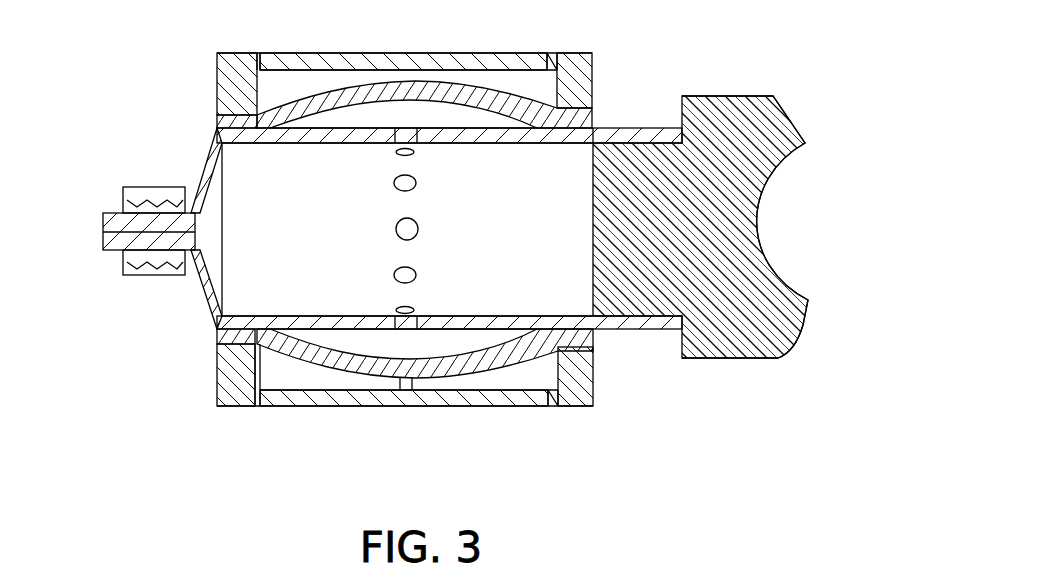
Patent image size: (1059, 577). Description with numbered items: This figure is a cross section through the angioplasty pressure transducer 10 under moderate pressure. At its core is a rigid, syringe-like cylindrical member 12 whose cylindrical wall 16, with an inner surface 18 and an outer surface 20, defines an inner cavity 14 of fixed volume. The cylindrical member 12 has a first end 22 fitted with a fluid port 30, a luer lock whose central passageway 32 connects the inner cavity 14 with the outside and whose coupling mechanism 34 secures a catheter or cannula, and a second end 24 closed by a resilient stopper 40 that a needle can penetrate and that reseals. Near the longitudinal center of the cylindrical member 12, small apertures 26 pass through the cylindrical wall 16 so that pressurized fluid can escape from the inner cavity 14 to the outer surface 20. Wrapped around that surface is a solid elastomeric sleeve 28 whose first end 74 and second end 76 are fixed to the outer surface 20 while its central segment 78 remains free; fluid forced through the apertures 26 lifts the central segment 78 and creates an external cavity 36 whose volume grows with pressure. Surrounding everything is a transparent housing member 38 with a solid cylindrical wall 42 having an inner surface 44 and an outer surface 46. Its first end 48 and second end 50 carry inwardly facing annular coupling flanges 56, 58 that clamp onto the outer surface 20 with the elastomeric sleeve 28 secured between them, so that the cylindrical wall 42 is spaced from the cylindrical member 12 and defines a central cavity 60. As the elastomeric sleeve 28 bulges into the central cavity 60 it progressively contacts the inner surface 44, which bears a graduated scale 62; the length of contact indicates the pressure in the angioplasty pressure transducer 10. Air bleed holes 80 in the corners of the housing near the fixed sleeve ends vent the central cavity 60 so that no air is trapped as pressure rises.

The angioplasty pressure transducer 10 is at (122, 70).
The cylindrical member 12 is at (650, 127).
The inner cavity 14 is at (489, 223).
The cylindrical wall 16 is at (300, 144).
The inner surface 18 is at (320, 315).
The outer surface 20 is at (222, 380).
The first end 22 is at (215, 329).
The second end 24 is at (658, 330).
The small apertures 26 is at (412, 155).
The elastomeric sleeve 28 is at (293, 100).
The fluid port 30 is at (127, 293).
The central passageway 32 is at (105, 218).
The coupling mechanism 34 is at (125, 262).
The external cavity 36 is at (396, 122).
The transparent housing member 38 is at (215, 52).
The stopper 40 is at (728, 96).
The cylindrical wall 42 is at (338, 407).
The inner surface 44 is at (282, 378).
The outer surface 46 is at (375, 407).
The first end 48 is at (215, 82).
The second end 50 is at (596, 62).
The inwardly facing annular coupling flange 56 is at (233, 407).
The inwardly facing annular coupling flange 58 is at (582, 370).
The central cavity 60 is at (516, 92).
The graduated scale 62 is at (488, 52).
The first end 74 is at (214, 128).
The second end 76 is at (600, 122).
The central segment 78 is at (410, 380).
The air bleed holes 80 is at (258, 52).